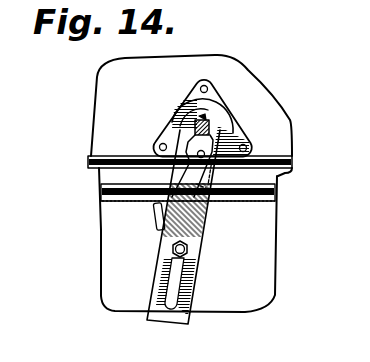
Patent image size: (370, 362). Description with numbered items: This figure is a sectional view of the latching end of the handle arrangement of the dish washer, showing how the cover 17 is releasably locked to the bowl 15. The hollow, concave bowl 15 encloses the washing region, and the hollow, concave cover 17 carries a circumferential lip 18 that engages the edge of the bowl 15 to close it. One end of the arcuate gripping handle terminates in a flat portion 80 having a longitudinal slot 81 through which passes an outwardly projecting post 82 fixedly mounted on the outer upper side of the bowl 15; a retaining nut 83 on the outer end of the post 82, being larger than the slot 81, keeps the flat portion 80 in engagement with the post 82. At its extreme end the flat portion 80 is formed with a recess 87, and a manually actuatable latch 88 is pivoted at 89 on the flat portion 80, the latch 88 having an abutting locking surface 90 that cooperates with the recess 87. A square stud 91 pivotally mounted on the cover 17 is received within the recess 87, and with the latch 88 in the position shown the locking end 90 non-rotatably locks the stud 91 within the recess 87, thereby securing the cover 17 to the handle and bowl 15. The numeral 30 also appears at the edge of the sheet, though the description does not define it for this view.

The hollow, concave bowl 15 is at (250, 297).
The cover 17 is at (97, 123).
The circumferential lip 18 is at (295, 167).
The adjacent figure numeral 30 is at (358, 7).
The flat portion 80 is at (205, 232).
The longitudinal slot 81 is at (171, 280).
The post 82 is at (172, 248).
The retaining nut 83 is at (186, 255).
The recess 87 is at (200, 117).
The latch 88 is at (205, 206).
The pivot 89 is at (205, 153).
The locking surface 90 is at (206, 118).
The square stud 91 is at (210, 130).